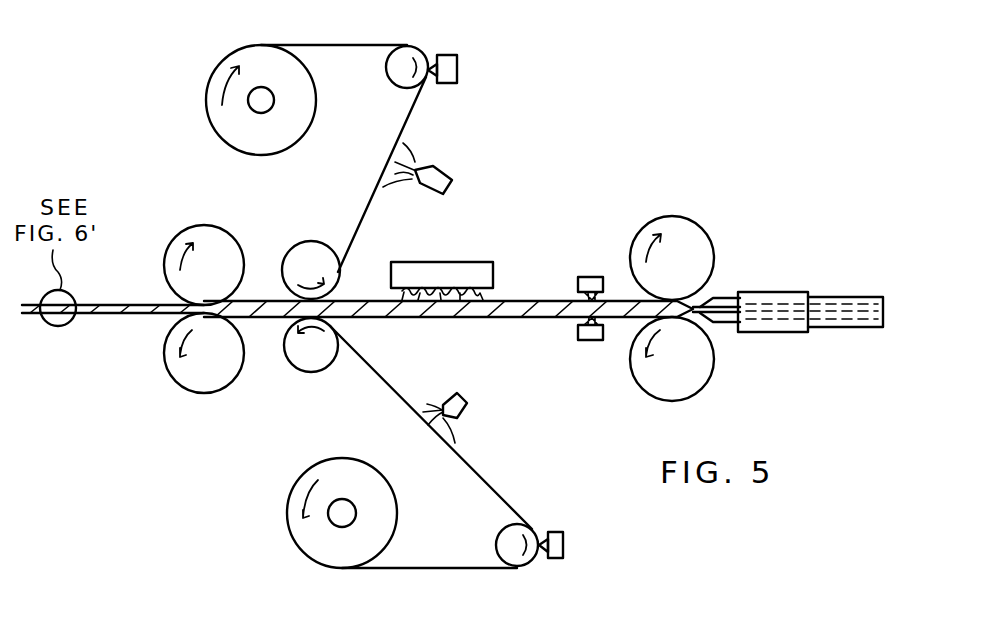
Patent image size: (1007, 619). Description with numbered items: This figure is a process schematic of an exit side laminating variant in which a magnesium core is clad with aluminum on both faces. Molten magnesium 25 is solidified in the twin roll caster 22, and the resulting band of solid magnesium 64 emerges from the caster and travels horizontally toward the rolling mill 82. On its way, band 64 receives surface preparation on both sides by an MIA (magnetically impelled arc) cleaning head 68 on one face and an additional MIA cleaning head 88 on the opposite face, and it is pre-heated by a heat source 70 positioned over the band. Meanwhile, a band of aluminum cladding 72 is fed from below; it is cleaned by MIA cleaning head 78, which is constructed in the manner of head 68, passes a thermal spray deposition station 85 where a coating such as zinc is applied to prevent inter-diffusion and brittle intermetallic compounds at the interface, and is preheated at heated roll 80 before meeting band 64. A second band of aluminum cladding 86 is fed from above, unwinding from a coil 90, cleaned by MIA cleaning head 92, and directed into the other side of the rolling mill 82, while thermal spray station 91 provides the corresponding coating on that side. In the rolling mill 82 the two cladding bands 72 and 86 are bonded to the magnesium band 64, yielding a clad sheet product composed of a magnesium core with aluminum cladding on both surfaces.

The twin roll caster 22 is at (733, 346).
The molten magnesium 25 is at (828, 296).
The band of solid magnesium 64 is at (505, 300).
The MIA cleaning head 68 is at (597, 340).
The heat source 70 is at (437, 262).
The band of aluminum cladding 72 is at (440, 568).
The MIA cleaning head 78 is at (564, 545).
The heated roll 80 is at (316, 372).
The rolling mill 82 is at (207, 394).
The thermal spray deposition station 85 is at (468, 405).
The band of aluminum cladding 86 is at (347, 44).
The MIA cleaning head 88 is at (594, 277).
The coil 90 is at (215, 75).
The thermal spray station 91 is at (449, 177).
The MIA cleaning head 92 is at (458, 68).